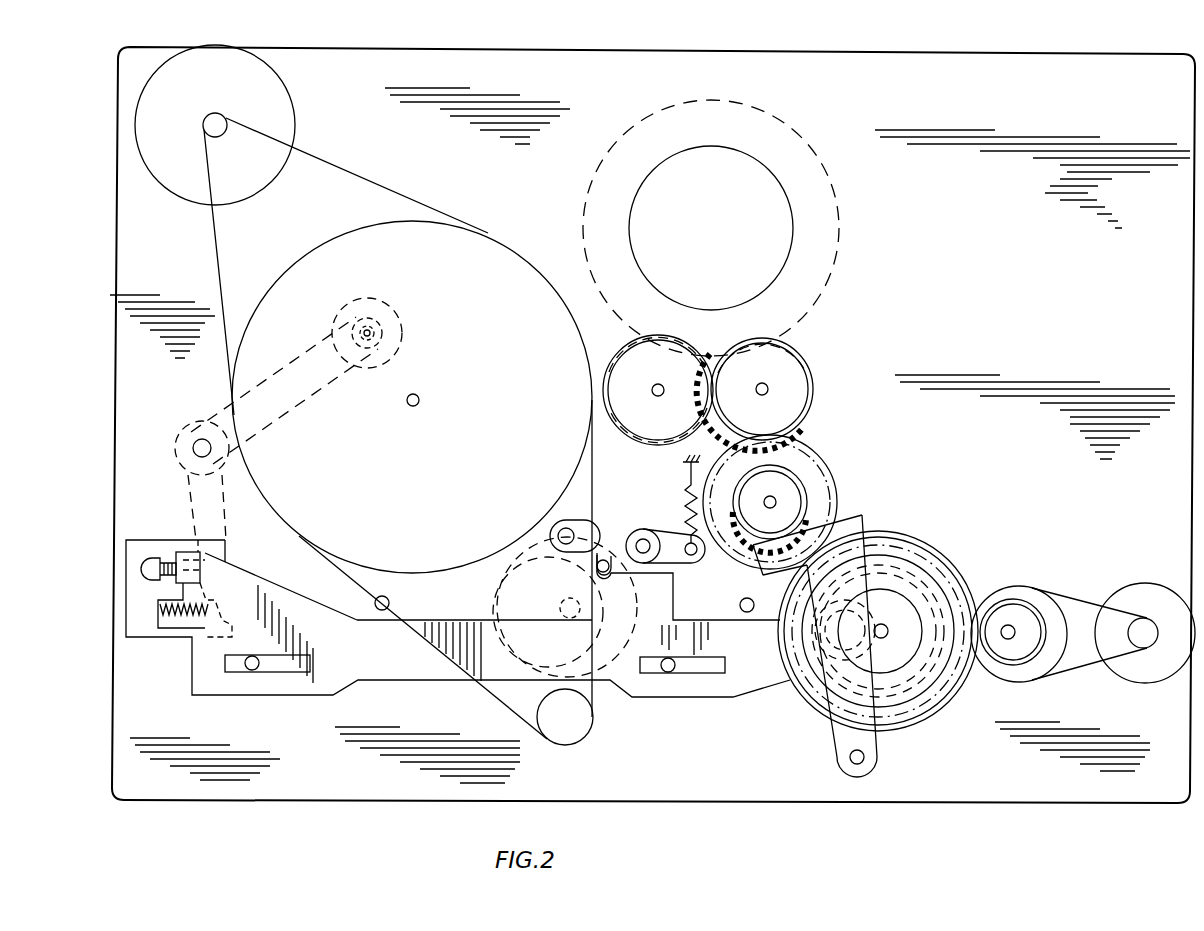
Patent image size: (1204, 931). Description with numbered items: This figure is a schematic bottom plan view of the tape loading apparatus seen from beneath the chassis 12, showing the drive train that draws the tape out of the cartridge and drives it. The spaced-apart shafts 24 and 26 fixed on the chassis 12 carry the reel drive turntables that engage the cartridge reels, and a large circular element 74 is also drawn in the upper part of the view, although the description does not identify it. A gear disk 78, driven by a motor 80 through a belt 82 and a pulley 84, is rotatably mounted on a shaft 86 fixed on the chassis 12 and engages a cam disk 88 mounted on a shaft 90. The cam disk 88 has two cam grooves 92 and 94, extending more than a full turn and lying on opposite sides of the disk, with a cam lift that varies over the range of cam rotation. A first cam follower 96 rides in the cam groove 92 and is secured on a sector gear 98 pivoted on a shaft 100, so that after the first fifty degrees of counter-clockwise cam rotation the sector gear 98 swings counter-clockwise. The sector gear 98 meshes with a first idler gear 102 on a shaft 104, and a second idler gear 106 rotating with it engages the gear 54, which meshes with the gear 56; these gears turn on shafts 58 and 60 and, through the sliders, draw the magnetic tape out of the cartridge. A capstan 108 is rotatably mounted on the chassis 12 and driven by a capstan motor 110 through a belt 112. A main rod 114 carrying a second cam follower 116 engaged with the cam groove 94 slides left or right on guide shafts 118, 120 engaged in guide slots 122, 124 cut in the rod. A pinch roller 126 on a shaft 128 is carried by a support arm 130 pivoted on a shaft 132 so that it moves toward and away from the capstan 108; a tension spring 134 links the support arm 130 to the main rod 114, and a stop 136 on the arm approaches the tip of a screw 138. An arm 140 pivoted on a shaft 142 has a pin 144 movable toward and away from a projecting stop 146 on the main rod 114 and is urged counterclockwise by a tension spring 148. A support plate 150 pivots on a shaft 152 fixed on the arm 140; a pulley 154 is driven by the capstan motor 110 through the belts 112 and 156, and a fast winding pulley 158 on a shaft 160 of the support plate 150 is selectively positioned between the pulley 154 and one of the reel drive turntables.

The chassis 12 is at (130, 688).
The shaft 24 is at (750, 600).
The shaft 26 is at (389, 601).
The gear 54 is at (812, 390).
The gear 56 is at (672, 436).
The shaft 58 is at (760, 388).
The shaft 60 is at (655, 393).
The drum 74 is at (777, 190).
The gear disk 78 is at (1012, 670).
The motor 80 is at (1145, 588).
The belt 82 is at (1080, 602).
The pulley 84 is at (1000, 590).
The shaft 86 is at (1013, 628).
The cam disk 88 is at (930, 552).
The shaft 90 is at (920, 716).
The cam groove 92 is at (885, 635).
The cam groove 94 is at (942, 568).
The first cam follower 96 is at (888, 580).
The sector gear 98 is at (864, 520).
The shaft 100 is at (850, 760).
The first idler gear 102 is at (800, 492).
The shaft 104 is at (765, 503).
The second idler gear 106 is at (826, 490).
The capstan 108 is at (418, 398).
The capstan motor 110 is at (278, 103).
The belt 112 is at (373, 187).
The main rod 114 is at (740, 700).
The second cam follower 116 is at (793, 660).
The guide shaft 118 is at (252, 672).
The guide shaft 120 is at (668, 673).
The guide slot 122 is at (292, 673).
The guide slot 124 is at (648, 675).
The pinch roller 126 is at (375, 305).
The shaft 128 is at (388, 330).
The support arm 130 is at (302, 424).
The shaft 132 is at (200, 440).
The tension spring 134 is at (186, 627).
The stop 136 is at (210, 560).
The screw 138 is at (160, 560).
The arm 140 is at (692, 562).
The shaft 142 is at (645, 538).
The pin 144 is at (605, 558).
The projecting stop 146 is at (673, 606).
The tension spring 148 is at (688, 504).
The support plate 150 is at (520, 550).
The shaft 152 is at (563, 530).
The pulley 154 is at (568, 742).
The belt 156 is at (594, 495).
The fast winding pulley 158 is at (498, 592).
The shaft 160 is at (588, 588).